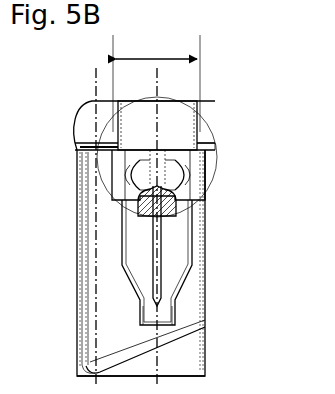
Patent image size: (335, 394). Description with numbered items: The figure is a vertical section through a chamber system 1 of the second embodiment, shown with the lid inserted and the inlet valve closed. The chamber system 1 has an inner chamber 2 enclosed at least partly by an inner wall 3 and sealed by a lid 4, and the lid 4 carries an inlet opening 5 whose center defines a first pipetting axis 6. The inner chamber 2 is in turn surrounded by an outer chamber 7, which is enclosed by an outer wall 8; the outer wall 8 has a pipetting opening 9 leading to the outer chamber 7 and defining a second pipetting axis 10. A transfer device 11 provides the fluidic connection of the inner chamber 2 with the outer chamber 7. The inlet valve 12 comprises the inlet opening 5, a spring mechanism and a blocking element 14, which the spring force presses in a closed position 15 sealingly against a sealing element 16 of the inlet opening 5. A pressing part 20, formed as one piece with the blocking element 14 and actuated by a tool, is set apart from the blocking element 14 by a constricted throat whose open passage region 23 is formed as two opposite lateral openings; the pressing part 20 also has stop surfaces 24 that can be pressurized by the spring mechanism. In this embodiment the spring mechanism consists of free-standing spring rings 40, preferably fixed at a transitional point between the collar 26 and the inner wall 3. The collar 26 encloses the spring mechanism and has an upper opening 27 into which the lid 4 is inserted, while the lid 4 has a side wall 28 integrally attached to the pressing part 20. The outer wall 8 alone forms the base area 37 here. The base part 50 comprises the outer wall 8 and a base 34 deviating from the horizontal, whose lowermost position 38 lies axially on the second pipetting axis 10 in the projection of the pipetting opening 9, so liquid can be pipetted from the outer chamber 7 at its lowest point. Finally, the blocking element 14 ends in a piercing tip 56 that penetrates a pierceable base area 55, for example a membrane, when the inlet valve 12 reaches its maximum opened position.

The chamber system 1 is at (243, 81).
The inner chamber 2 is at (150, 249).
The inner wall 3 is at (78, 222).
The lid 4 is at (155, 128).
The inlet opening 5 is at (168, 104).
The first pipetting axis 6 is at (205, 348).
The outer chamber 7 is at (115, 303).
The outer wall 8 is at (80, 278).
The pipetting opening 9 is at (91, 115).
The second pipetting axis 10 is at (96, 70).
The transfer device 11 is at (151, 263).
The inlet valve 12 is at (205, 142).
The blocking element 14 is at (140, 196).
The closed position 15 is at (207, 199).
The sealing element 16 is at (205, 210).
The pressing part 20 is at (80, 148).
The open passage region 23 is at (112, 165).
The stop surfaces 24 is at (196, 160).
The collar 26 is at (210, 174).
The upper opening 27 is at (156, 83).
The side wall 28 is at (205, 132).
The base 34 is at (110, 342).
The base area 37 is at (175, 381).
The lowermost position 38 is at (90, 370).
The spring rings 40 is at (80, 168).
The base part 50 is at (205, 316).
The pierceable base area 55 is at (150, 322).
The piercing tip 56 is at (158, 302).